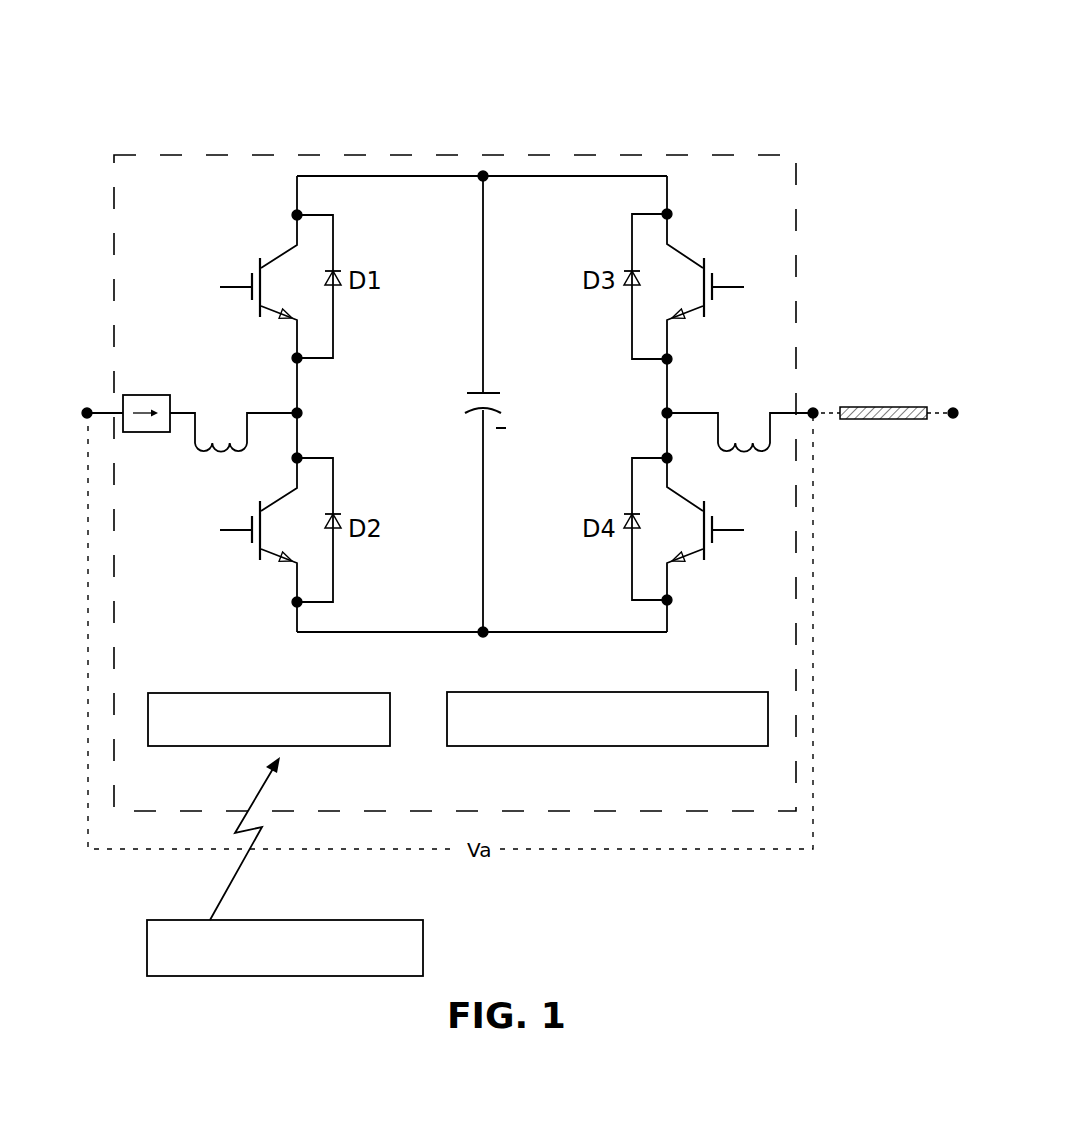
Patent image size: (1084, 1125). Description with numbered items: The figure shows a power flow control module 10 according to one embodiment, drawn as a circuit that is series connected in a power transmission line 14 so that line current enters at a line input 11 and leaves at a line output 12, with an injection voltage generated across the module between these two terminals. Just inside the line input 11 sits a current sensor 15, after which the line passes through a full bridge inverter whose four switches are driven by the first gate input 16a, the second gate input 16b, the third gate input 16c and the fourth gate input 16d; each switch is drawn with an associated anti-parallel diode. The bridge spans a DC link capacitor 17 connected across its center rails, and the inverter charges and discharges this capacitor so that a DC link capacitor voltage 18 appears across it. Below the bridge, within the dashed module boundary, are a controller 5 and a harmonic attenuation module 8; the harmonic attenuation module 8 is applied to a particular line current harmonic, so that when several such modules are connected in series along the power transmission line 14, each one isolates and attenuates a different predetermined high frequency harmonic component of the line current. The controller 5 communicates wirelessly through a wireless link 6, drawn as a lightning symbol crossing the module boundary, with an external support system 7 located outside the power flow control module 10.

The power flow control module 10 is at (290, 92).
The line input 11 is at (84, 418).
The line output 12 is at (818, 418).
The power transmission line 14 is at (902, 405).
The current sensor 15 is at (146, 394).
The input G1 16a is at (198, 270).
The input G2 16b is at (196, 548).
The input G3 16c is at (769, 275).
The input G4 16d is at (757, 548).
The DC link capacitor 17 is at (472, 419).
The DC link capacitor voltage Vdc 18 is at (421, 386).
The controller 5 is at (191, 691).
The wireless link 6 is at (245, 838).
The external support system 7 is at (389, 919).
The harmonic attenuation module 8 is at (705, 691).